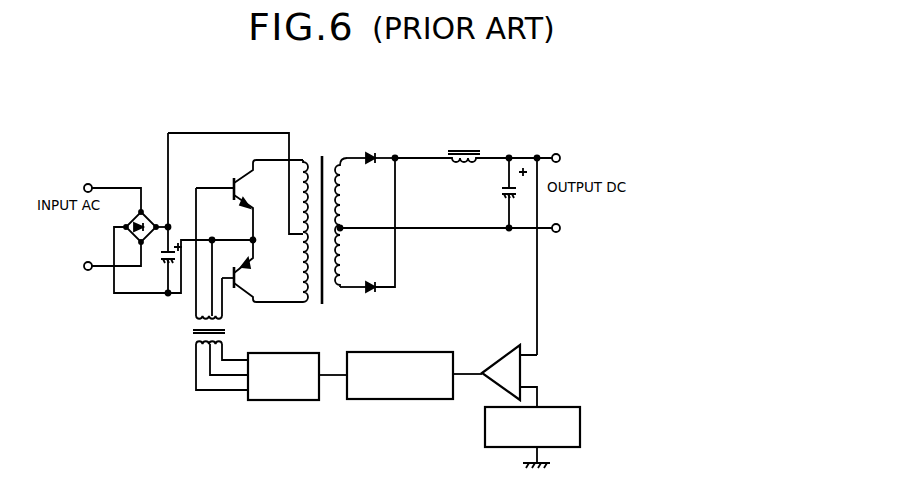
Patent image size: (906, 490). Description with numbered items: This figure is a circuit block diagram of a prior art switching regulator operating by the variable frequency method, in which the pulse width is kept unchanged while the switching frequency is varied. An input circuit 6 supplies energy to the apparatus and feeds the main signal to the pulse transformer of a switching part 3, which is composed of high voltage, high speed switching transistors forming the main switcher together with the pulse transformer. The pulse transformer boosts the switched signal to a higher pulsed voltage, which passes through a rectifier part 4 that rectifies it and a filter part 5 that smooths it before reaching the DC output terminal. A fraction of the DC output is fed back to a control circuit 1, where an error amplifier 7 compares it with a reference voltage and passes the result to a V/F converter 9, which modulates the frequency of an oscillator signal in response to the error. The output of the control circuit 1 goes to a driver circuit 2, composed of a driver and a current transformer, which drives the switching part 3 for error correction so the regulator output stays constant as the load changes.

The control circuit 1 is at (322, 319).
The driver circuit 2 is at (324, 398).
The switching part 3 is at (337, 121).
The rectifier part 4 is at (408, 130).
The filter part 5 is at (533, 137).
The input circuit 6 is at (175, 299).
The error amplifier 7 is at (487, 349).
The V/F converter 9 is at (397, 352).